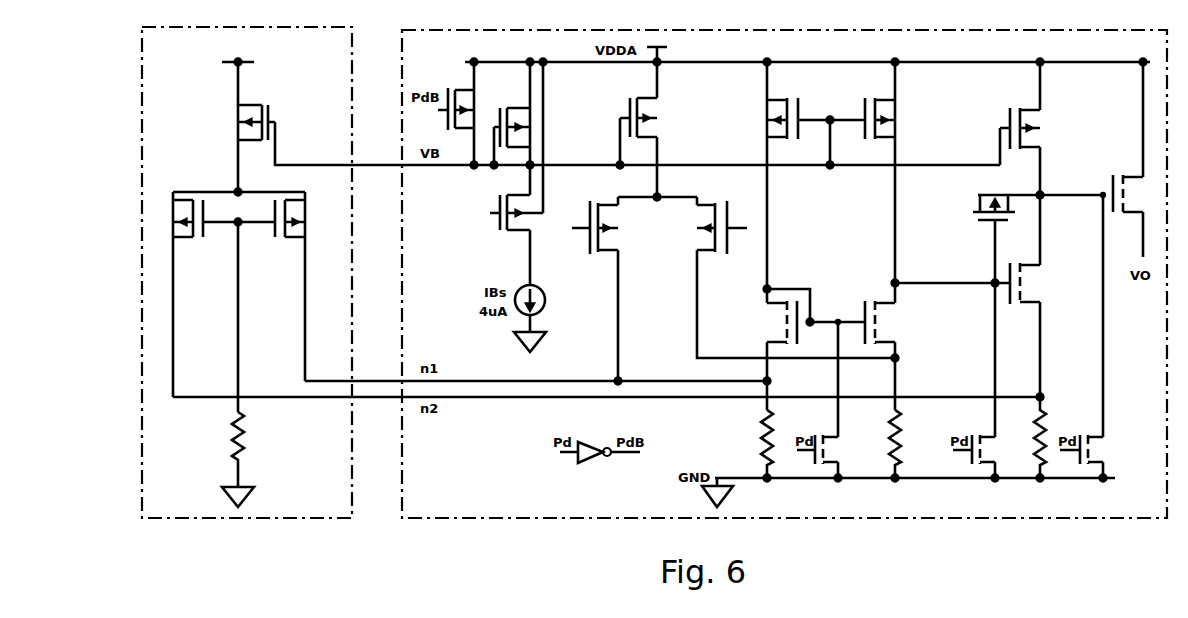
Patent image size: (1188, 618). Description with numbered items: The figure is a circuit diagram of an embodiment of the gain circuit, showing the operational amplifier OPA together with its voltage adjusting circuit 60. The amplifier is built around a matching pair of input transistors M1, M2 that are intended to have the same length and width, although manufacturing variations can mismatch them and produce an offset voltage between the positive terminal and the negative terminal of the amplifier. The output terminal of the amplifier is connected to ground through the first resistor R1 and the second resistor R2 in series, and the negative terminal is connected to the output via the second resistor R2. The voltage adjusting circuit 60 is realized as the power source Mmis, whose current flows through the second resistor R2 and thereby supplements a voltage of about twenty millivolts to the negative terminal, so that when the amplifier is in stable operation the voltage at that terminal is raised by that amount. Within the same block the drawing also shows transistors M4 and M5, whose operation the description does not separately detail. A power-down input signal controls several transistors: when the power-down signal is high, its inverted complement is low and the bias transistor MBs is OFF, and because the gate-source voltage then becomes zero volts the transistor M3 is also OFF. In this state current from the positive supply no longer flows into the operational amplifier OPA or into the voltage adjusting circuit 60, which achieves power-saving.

The voltage adjusting circuit 60 is at (247, 309).
The PMOS transistor M4 is at (295, 125).
The PMOS transistor M5 is at (224, 234).
The power source Mmis is at (278, 234).
The transistor M3 is at (512, 128).
The bias transistor MBs is at (510, 173).
The input transistor M2 is at (591, 289).
The input transistor M1 is at (796, 277).
The second resistor R2 is at (753, 444).
The first resistor R1 is at (909, 444).